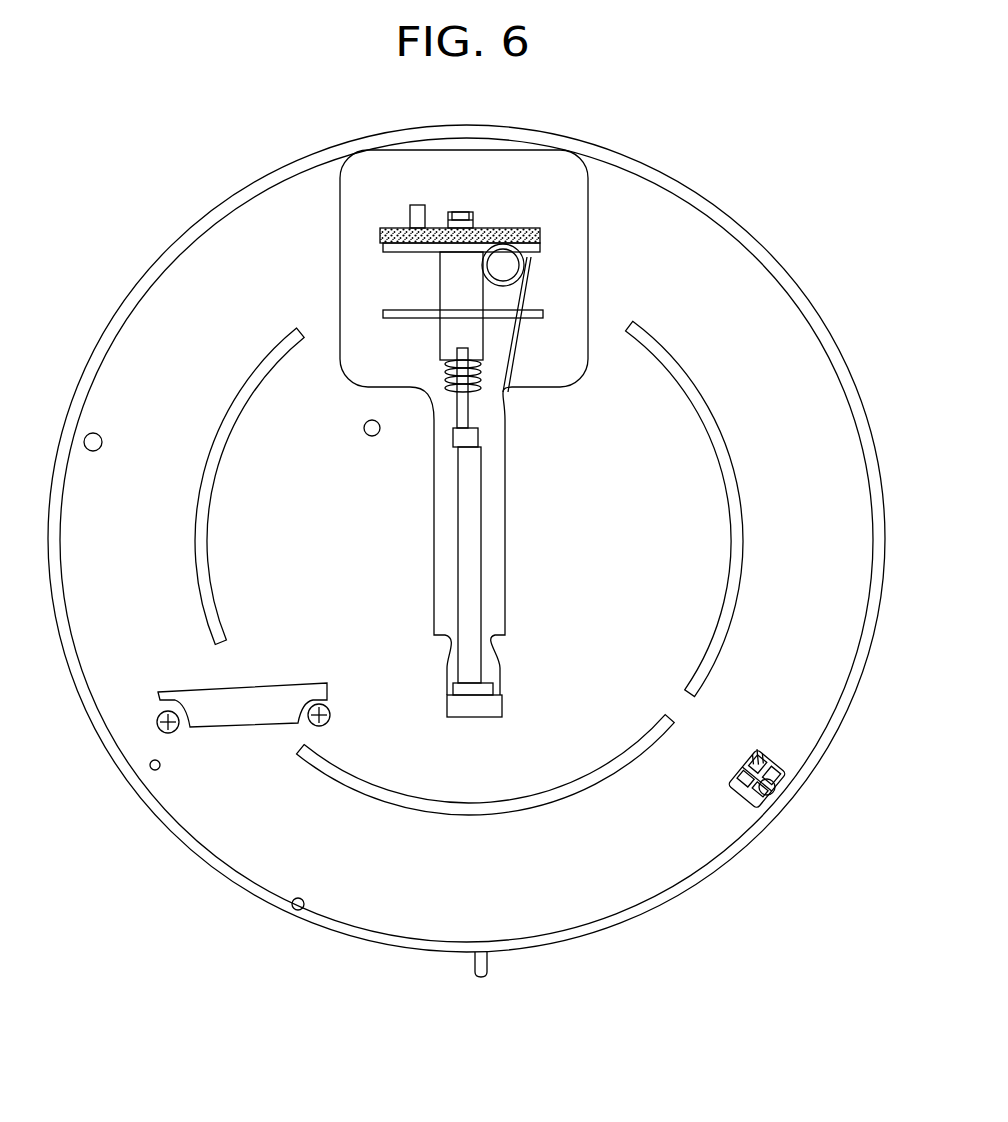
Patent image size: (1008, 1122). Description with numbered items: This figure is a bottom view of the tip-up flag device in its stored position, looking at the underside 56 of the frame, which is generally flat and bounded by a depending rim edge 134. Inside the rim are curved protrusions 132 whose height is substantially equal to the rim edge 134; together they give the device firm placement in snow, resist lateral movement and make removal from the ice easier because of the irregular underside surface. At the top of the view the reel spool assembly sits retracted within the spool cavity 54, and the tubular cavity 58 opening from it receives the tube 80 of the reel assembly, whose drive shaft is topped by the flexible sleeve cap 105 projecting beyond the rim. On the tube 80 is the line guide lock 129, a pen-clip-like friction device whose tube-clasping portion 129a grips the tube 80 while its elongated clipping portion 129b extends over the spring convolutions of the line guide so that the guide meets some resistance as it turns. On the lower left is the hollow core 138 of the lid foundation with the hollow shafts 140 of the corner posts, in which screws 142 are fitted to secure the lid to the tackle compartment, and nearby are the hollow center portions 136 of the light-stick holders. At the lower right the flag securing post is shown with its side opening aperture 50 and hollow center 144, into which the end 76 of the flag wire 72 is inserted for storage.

The side opening aperture 50 is at (748, 752).
The spool cavity 54 is at (535, 163).
The underside 56 is at (752, 270).
The tubular cavity 58 is at (493, 494).
The flag wire 72 is at (733, 779).
The end of flag wire 76 is at (770, 793).
The tube 80 is at (470, 545).
The flexible sleeve cap 105 is at (487, 963).
The line guide lock 129 is at (453, 422).
The tube-clasping portion 129a is at (474, 437).
The line-guide clipping portion 129b is at (481, 404).
The curved protrusions 132 is at (263, 360).
The depending rim edge 134 is at (808, 308).
The hollow center portions 136 is at (160, 765).
The hollow core 138 is at (283, 695).
The hollow shafts 140 is at (103, 443).
The screws 142 is at (155, 710).
The hollow center 144 is at (773, 758).